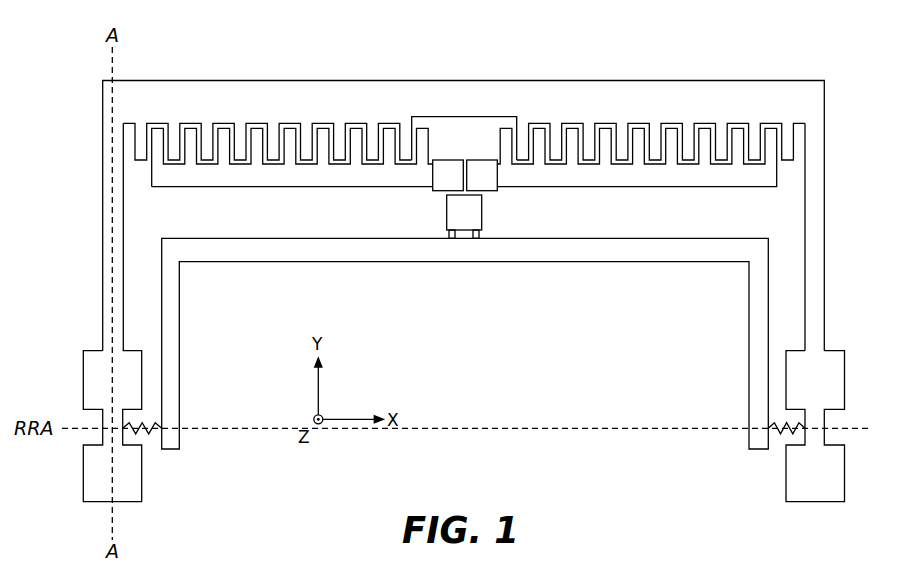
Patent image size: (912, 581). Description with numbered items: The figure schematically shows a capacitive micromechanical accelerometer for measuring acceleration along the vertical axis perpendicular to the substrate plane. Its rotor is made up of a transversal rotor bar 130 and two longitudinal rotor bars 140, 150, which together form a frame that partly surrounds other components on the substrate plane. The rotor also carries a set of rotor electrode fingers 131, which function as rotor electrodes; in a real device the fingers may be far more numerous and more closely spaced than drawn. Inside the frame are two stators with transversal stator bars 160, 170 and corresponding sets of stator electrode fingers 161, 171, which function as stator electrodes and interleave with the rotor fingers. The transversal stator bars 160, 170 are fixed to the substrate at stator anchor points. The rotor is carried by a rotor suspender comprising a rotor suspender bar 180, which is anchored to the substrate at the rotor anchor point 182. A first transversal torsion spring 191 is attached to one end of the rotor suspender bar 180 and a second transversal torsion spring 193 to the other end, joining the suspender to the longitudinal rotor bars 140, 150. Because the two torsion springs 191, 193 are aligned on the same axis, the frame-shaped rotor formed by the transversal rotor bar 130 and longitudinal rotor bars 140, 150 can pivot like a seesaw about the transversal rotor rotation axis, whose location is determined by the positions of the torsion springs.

The transversal rotor bar 130 is at (513, 79).
The rotor electrode fingers 131 is at (623, 124).
The longitudinal rotor bar 140 is at (101, 283).
The longitudinal rotor bar 150 is at (825, 252).
The transversal stator bar 160 is at (273, 188).
The stator electrode fingers 161 is at (292, 121).
The transversal stator bar 170 is at (620, 188).
The stator electrode fingers 171 is at (739, 130).
The rotor suspender bar 180 is at (527, 262).
The rotor anchor point 182 is at (462, 233).
The first transversal torsion spring 191 is at (148, 438).
The second transversal torsion spring 193 is at (792, 436).